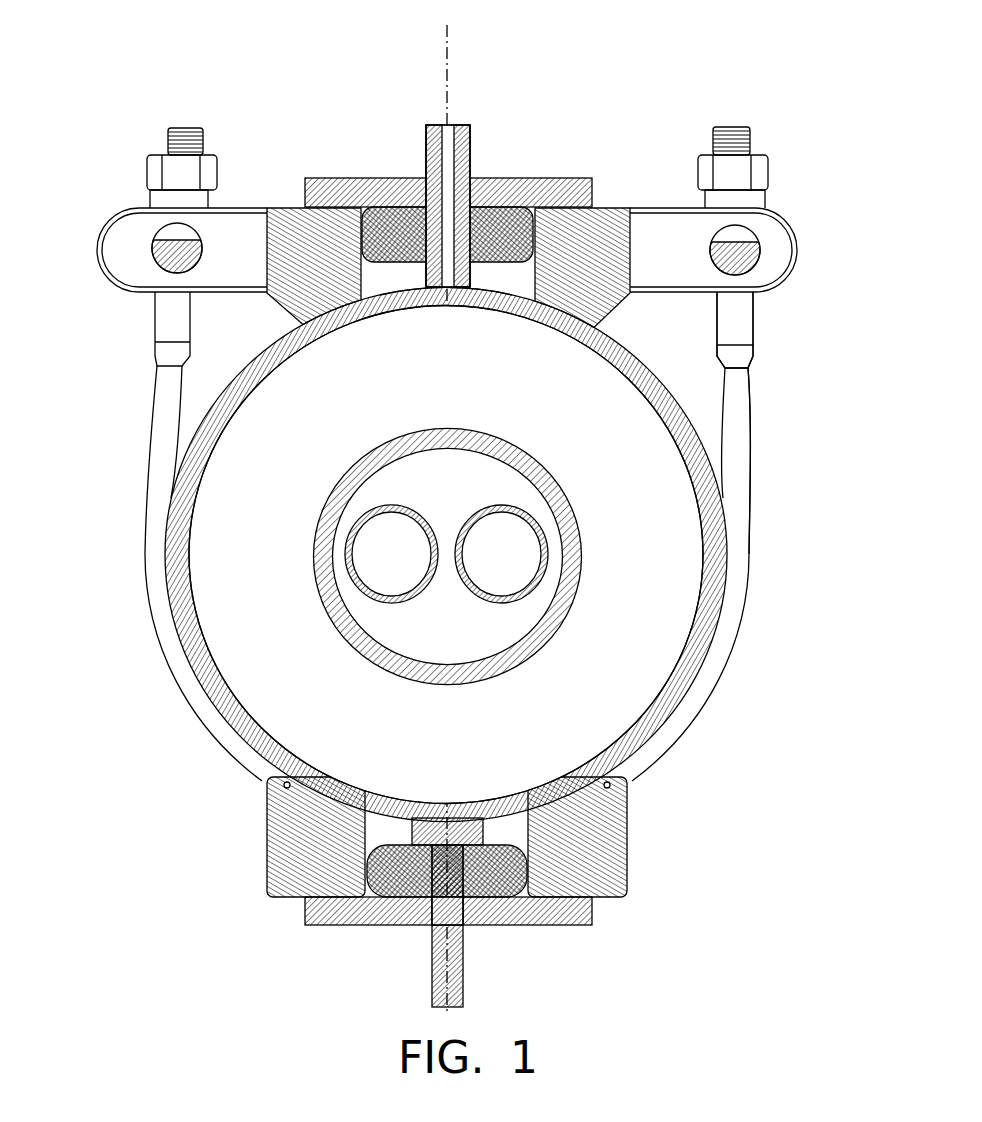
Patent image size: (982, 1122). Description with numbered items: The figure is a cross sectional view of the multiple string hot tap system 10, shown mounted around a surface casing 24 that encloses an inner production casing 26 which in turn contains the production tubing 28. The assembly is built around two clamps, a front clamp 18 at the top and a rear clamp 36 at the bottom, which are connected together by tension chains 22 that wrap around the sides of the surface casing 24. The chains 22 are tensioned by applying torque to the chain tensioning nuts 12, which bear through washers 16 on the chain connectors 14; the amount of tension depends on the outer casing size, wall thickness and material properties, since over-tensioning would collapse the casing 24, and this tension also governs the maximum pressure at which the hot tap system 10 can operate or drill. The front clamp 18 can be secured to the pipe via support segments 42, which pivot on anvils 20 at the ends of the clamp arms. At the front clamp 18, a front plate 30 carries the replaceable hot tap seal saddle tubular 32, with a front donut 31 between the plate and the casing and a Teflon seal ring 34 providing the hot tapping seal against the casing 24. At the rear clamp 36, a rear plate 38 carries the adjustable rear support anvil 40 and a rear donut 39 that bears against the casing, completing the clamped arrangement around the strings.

The multiple string hot tap system 10 is at (353, 122).
The chain tensioning nut 12 is at (215, 178).
The chain connector 14 is at (200, 127).
The washer 16 is at (147, 198).
The front clamp 18 is at (793, 354).
The anvil 20 is at (152, 249).
The tension chain 22 is at (142, 538).
The surface casing 24 is at (663, 385).
The production casing 26 is at (517, 443).
The production tubing 28 is at (410, 603).
The front plate 30 is at (496, 178).
The front donut 31 is at (514, 240).
The hot tap seal saddle tubular 32 is at (463, 127).
The Teflon seal ring 34 is at (430, 280).
The rear clamp 36 is at (628, 866).
The rear plate 38 is at (593, 910).
The rear donut 39 is at (477, 857).
The rear support anvil 40 is at (465, 947).
The support segments 42 is at (290, 313).